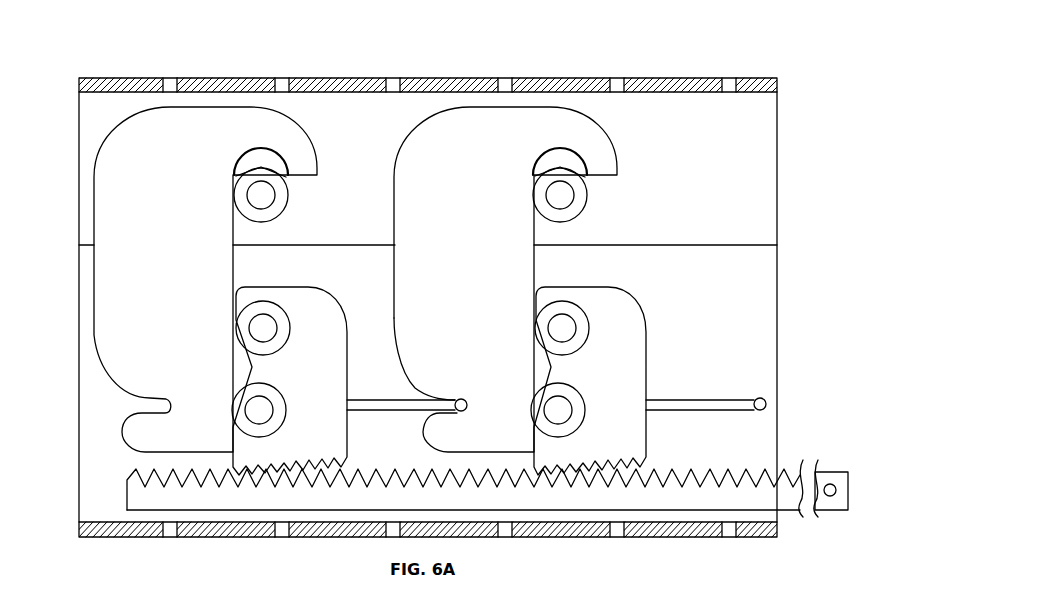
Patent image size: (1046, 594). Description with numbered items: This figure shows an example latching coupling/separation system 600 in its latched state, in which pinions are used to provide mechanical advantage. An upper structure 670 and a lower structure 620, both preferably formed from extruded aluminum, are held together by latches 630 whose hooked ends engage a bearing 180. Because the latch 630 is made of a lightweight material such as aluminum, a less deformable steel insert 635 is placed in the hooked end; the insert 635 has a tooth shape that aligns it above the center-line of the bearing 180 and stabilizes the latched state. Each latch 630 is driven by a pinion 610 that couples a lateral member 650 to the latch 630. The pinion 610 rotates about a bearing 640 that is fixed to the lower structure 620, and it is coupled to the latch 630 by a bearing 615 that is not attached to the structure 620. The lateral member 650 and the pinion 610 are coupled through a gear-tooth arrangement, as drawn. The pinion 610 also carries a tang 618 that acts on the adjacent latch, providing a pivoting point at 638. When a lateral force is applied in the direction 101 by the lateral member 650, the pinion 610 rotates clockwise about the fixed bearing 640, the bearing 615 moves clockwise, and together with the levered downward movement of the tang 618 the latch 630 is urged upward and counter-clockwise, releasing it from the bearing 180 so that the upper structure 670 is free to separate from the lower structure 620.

The latching coupling/separation system 600 is at (843, 310).
The upper structure 670 is at (112, 77).
The lower structure 620 is at (112, 537).
The latch element 630 is at (435, 142).
The insert 635 is at (563, 158).
The bearing 180 is at (573, 198).
The pinion 610 is at (628, 320).
The bearing 640 is at (562, 318).
The bearing 615 is at (580, 393).
The pivoting point 638 is at (465, 400).
The tang 618 is at (693, 402).
The lateral member 650 is at (645, 498).
The direction 101 is at (858, 433).